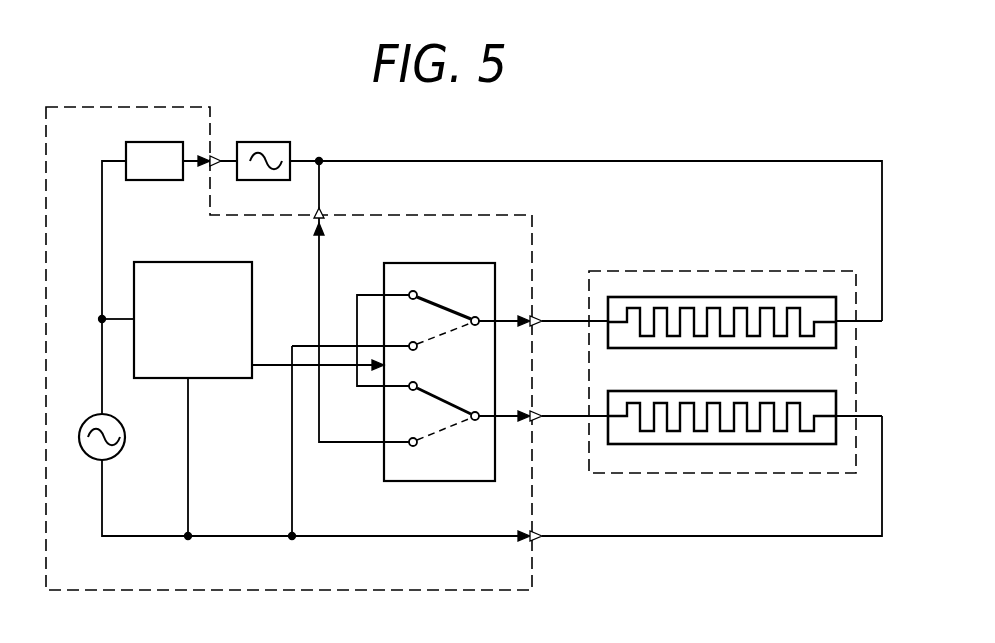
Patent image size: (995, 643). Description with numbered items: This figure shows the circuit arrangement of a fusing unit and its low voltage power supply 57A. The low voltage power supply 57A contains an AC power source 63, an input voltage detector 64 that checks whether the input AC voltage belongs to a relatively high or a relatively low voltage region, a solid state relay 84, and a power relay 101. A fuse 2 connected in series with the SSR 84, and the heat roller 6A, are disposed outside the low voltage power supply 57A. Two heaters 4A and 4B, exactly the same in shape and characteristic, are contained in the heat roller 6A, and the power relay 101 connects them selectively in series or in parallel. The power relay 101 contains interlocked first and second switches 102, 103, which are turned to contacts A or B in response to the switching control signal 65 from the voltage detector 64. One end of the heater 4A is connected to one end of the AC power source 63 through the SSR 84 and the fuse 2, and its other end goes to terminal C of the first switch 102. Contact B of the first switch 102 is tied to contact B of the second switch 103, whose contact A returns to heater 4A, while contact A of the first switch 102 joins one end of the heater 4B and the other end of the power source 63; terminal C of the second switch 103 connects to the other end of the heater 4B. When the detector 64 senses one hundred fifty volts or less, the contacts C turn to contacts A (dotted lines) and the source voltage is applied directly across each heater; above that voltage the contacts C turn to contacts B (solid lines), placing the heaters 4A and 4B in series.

The fuse 2 is at (278, 142).
The solid state relay 84 is at (165, 180).
The AC power source 63 is at (126, 434).
The input voltage detector 64 is at (230, 379).
The switching control signal 65 is at (271, 358).
The power relay 101 is at (417, 372).
The first switch 102 is at (452, 295).
The second switch 103 is at (448, 428).
The heat roller 6A is at (642, 272).
The heater 4A is at (742, 297).
The heater 4B is at (762, 446).
The low voltage power supply 57A is at (533, 572).